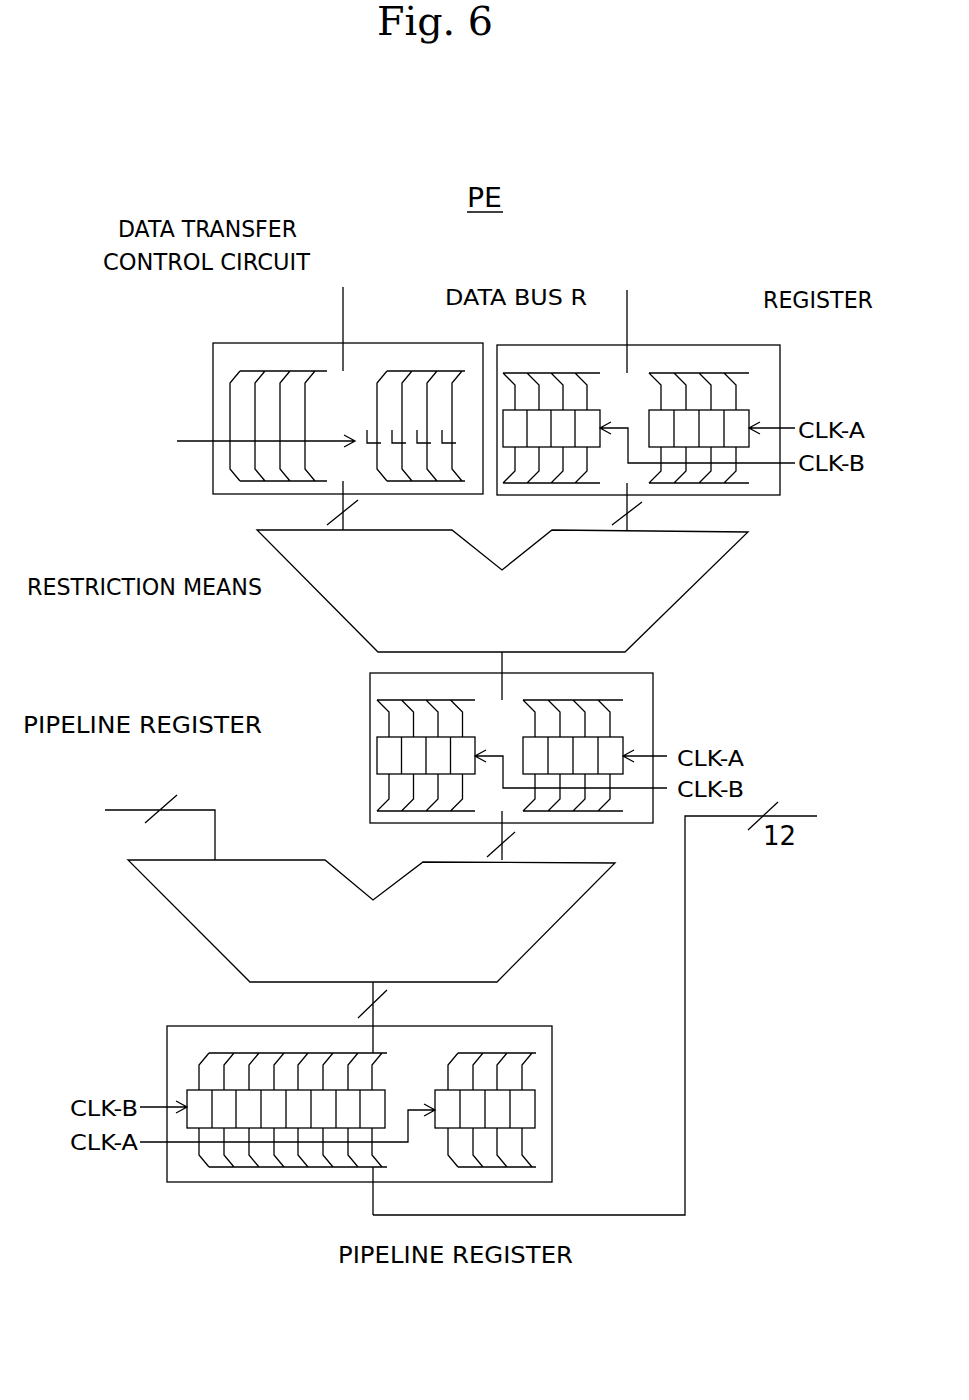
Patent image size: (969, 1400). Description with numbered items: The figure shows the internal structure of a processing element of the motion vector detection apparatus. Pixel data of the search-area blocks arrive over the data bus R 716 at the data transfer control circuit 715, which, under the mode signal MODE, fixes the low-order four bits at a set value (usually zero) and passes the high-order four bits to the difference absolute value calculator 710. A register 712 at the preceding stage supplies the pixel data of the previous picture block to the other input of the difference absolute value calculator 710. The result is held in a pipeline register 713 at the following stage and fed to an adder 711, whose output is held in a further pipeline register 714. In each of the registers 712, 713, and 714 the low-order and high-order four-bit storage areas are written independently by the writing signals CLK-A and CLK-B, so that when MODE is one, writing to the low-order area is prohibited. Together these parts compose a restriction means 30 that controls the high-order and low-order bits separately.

The restriction means 30 is at (188, 497).
The difference absolute value calculator 710 is at (340, 612).
The adder 711 is at (187, 918).
The register 712 is at (672, 345).
The pipeline register 713 is at (370, 724).
The pipeline register 714 is at (280, 1182).
The data transfer control circuit 715 is at (318, 343).
The data bus R 716 is at (343, 313).